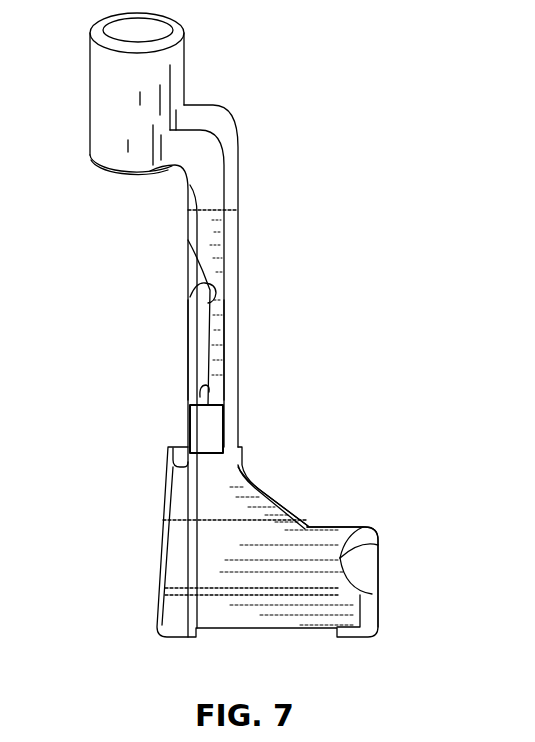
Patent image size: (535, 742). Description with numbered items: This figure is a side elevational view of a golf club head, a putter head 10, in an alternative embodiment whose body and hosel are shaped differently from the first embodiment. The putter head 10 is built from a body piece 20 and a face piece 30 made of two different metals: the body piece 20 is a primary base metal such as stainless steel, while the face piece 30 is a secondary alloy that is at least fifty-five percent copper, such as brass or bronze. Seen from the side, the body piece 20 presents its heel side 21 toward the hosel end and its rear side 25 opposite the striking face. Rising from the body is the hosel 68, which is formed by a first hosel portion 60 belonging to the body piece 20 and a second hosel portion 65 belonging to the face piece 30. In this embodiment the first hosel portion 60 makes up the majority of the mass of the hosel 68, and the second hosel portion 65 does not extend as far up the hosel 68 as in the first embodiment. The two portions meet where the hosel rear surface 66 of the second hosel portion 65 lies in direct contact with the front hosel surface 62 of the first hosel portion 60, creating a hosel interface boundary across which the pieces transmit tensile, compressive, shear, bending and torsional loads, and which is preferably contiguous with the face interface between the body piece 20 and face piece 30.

The putter head 10 is at (206, 417).
The body piece 20 is at (373, 528).
The heel side 21 is at (207, 562).
The rear side 25 is at (378, 597).
The face piece 30 is at (160, 550).
The first hosel portion 60 is at (223, 333).
The front hosel surface 62 is at (209, 392).
The second hosel portion 65 is at (187, 343).
The hosel rear surface 66 is at (190, 297).
The hosel 68 is at (240, 208).